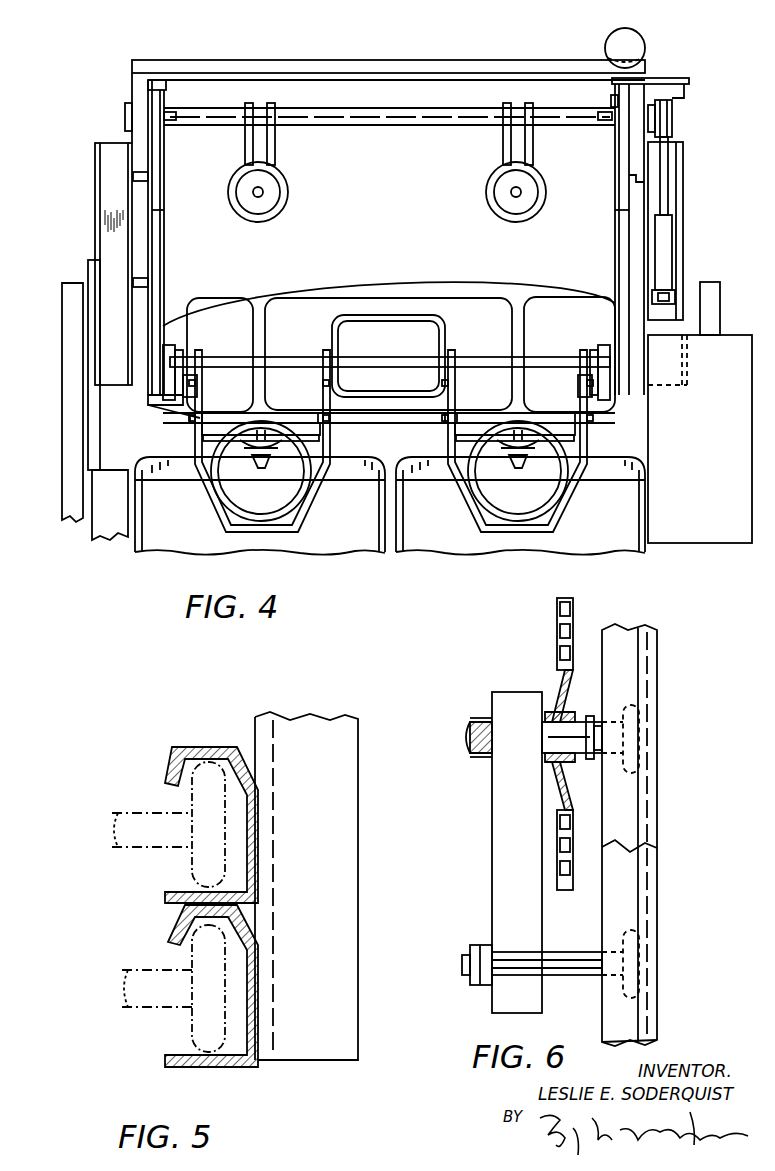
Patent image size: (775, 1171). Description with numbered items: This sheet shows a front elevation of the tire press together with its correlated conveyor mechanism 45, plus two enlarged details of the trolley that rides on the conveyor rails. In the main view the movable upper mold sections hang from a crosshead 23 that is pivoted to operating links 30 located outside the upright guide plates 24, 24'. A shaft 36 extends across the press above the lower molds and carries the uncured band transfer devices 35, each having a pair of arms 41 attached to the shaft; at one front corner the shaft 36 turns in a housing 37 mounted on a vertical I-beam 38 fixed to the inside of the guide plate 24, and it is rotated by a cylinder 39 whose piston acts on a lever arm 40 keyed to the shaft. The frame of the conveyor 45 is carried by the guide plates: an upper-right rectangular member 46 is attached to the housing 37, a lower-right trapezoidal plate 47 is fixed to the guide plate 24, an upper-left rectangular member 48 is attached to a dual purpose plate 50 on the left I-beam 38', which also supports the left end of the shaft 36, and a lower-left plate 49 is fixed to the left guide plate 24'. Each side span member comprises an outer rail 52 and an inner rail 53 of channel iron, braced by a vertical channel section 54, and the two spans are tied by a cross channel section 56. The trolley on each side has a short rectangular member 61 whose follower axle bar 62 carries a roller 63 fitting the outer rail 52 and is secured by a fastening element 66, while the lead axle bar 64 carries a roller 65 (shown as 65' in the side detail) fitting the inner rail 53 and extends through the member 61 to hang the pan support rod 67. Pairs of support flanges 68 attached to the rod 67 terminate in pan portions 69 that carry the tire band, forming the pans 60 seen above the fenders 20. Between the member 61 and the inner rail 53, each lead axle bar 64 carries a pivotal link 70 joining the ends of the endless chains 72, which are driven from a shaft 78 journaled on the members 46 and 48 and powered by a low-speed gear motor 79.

In FIG. 4, the vehicle fenders 20 is at (428, 548).
In FIG. 4, the crosshead 23 is at (497, 302).
In FIG. 4, the guide plate 24 is at (700, 422).
In FIG. 4, the left side guide plate 24' is at (81, 412).
In FIG. 4, the operating link 30 is at (68, 495).
In FIG. 4, the uncured band transfer device 35 is at (292, 195).
In FIG. 4, the shaft 36 is at (437, 125).
In FIG. 4, the housing 37 is at (640, 98).
In FIG. 4, the vertical I-beam 38 is at (685, 231).
In FIG. 4, the vertical I-beam 38' is at (82, 264).
In FIG. 4, the cylinder 39 is at (665, 250).
In FIG. 4, the lever arm 40 is at (670, 120).
In FIG. 4, the arms 41 is at (250, 140).
In FIG. 4, the conveyor mechanism 45 is at (557, 49).
In FIG. 4, the rectangular structural member 46 is at (612, 100).
In FIG. 4, the trapezoidal structural plate 47 is at (630, 392).
In FIG. 4, the rectangular structural member 48 is at (150, 126).
In FIG. 4, the structural plate 49 is at (158, 388).
In FIG. 4, the dual purpose plate 50 is at (137, 92).
In FIG. 4, the outer rail 52 is at (162, 247).
In FIG. 5, the outer rail 52 is at (216, 1067).
In FIG. 6, the outer rail 52 is at (650, 1033).
In FIG. 5, the inner rail 53 is at (208, 748).
In FIG. 6, the inner rail 53 is at (635, 668).
In FIG. 5, the vertical channel section 54 is at (350, 896).
In FIG. 4, the cross channel section 56 is at (442, 67).
In FIG. 4, the pan 60 is at (335, 436).
In FIG. 4, the rectangular member 61 is at (197, 388).
In FIG. 6, the rectangular member 61 is at (500, 902).
In FIG. 4, the follower axle bar 62 is at (192, 396).
In FIG. 5, the follower axle bar 62 is at (138, 1005).
In FIG. 6, the follower axle bar 62 is at (583, 975).
In FIG. 5, the roller 63 is at (200, 1020).
In FIG. 6, the roller 63 is at (640, 951).
In FIG. 4, the lead axle bar 64 is at (168, 356).
In FIG. 5, the lead axle bar 64 is at (130, 842).
In FIG. 6, the lead axle bar 64 is at (590, 722).
In FIG. 5, the roller 65 is at (176, 824).
In FIG. 6, the upper slot 65' is at (662, 739).
In FIG. 6, the fastening element 66 is at (480, 988).
In FIG. 4, the pan support rod 67 is at (470, 357).
In FIG. 6, the pan support rod 67 is at (475, 755).
In FIG. 4, the support flanges 68 is at (320, 352).
In FIG. 4, the pan portion 69 is at (288, 527).
In FIG. 6, the link 70 is at (558, 712).
In FIG. 6, the endless chain 72 is at (573, 615).
In FIG. 4, the shaft 78 is at (170, 120).
In FIG. 4, the gear motor 79 is at (640, 50).